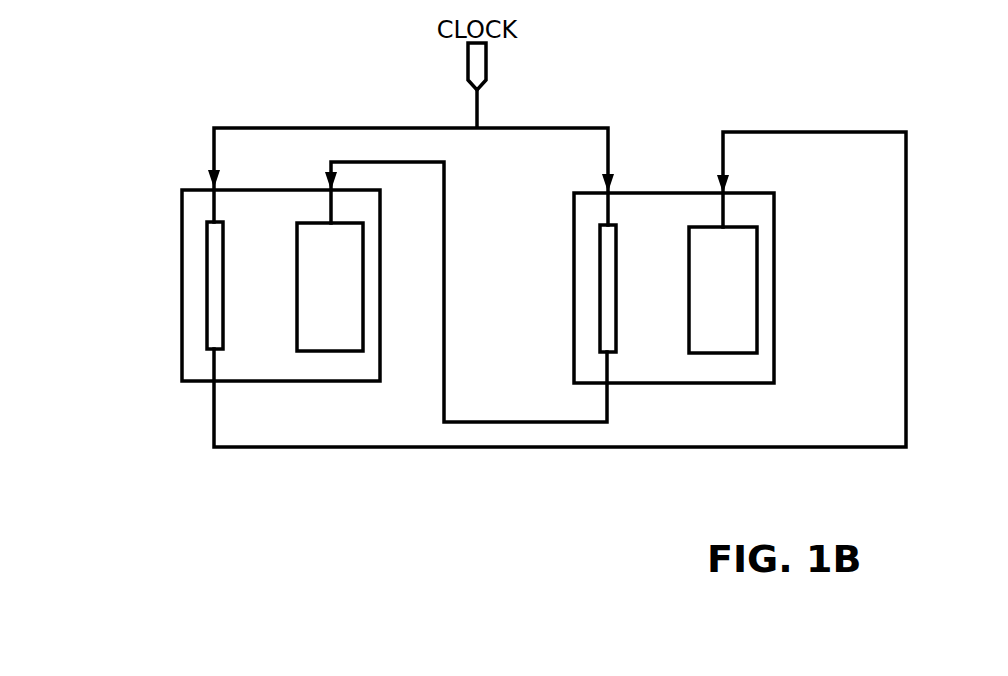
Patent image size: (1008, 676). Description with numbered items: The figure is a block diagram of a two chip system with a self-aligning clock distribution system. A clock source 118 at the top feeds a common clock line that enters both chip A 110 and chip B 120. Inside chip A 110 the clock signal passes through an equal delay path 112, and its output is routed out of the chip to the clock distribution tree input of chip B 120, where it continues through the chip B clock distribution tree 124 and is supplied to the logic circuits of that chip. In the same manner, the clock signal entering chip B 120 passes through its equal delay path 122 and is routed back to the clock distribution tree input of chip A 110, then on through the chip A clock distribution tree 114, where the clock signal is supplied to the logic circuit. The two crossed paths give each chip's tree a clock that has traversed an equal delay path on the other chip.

The chip A 110 is at (180, 278).
The equal delay path 112 is at (201, 236).
The clock distribution tree 114 is at (365, 238).
The clock 118 is at (486, 60).
The chip B 120 is at (573, 281).
The equal delay path 122 is at (597, 240).
The clock distribution tree 124 is at (757, 243).